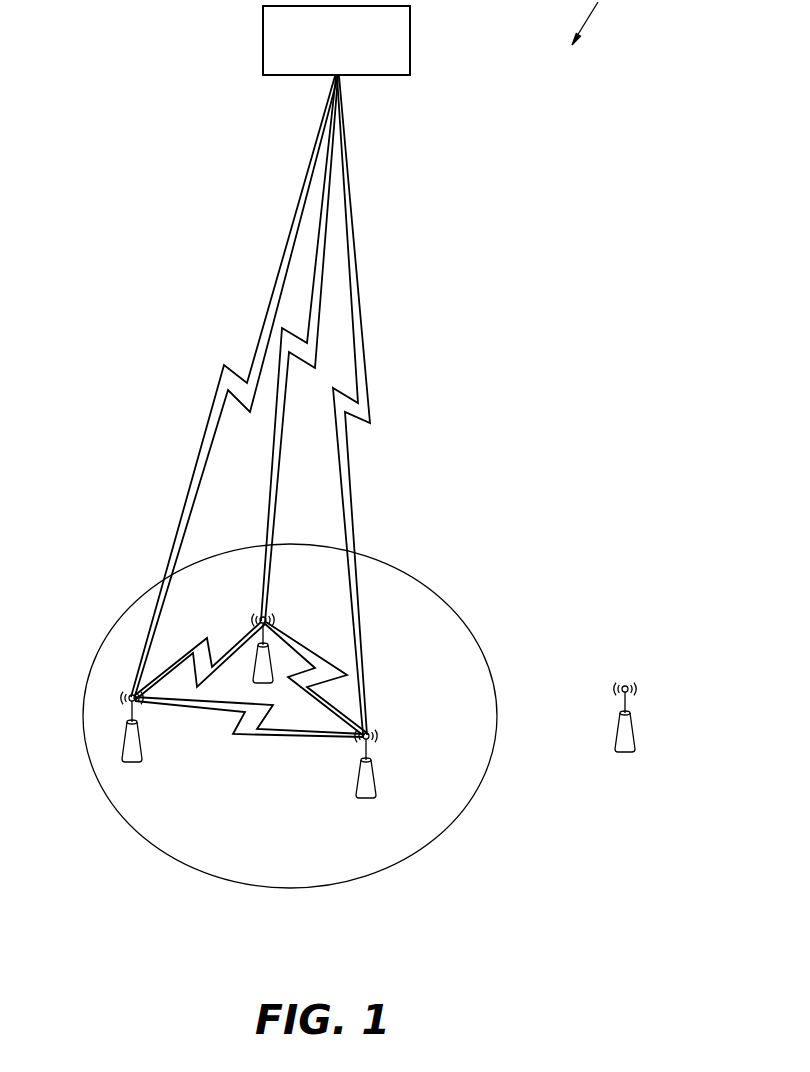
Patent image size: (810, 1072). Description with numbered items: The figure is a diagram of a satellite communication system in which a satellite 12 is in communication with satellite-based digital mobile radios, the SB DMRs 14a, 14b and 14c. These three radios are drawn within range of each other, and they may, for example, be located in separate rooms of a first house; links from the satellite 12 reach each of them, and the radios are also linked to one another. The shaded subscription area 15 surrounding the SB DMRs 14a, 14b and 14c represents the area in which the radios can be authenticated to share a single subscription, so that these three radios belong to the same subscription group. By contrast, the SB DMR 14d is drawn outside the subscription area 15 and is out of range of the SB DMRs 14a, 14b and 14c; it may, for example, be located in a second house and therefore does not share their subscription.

The satellite 12 is at (410, 34).
The SB DMR 14a is at (377, 787).
The SB DMR 14b is at (272, 658).
The SB DMR 14c is at (122, 744).
The SB DMR 14d is at (636, 699).
The subscription area 15 is at (436, 592).